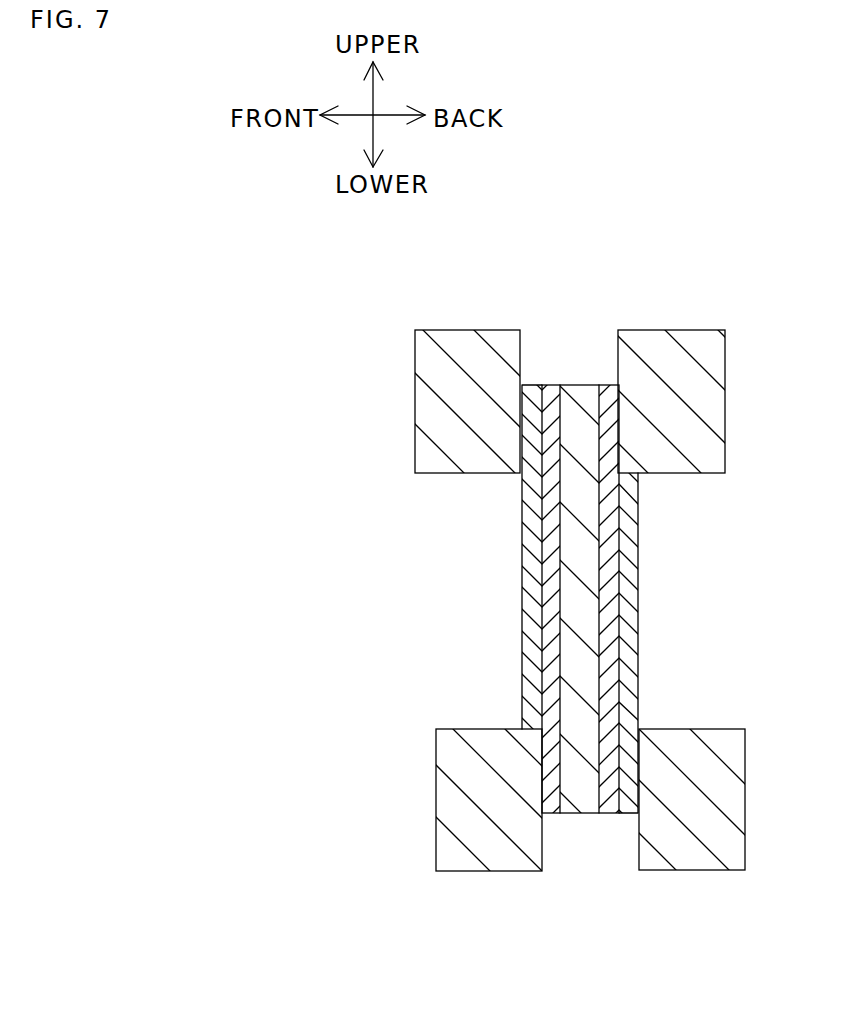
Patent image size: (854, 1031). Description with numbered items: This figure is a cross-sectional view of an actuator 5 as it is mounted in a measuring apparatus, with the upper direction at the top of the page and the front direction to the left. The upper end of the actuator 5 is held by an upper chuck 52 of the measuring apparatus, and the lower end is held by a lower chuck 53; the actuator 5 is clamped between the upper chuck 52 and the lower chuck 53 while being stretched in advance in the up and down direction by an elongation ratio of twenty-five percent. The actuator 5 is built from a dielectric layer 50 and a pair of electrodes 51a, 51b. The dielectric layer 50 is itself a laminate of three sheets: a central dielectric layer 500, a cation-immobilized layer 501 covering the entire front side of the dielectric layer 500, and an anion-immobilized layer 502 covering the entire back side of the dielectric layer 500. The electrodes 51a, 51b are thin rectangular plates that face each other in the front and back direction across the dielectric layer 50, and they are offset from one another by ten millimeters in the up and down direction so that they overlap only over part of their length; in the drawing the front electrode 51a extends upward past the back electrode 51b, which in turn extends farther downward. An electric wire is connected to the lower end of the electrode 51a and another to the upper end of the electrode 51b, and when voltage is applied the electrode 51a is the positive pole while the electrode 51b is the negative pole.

The actuator 5 is at (741, 525).
The dielectric layer 50 is at (664, 511).
The dielectric layer 500 is at (579, 395).
The cation-immobilized layer 501 is at (552, 400).
The anion-immobilized layer 502 is at (604, 400).
The electrode 51a is at (528, 562).
The electrode 51b is at (628, 560).
The upper chuck 52 is at (425, 362).
The lower chuck 53 is at (450, 852).